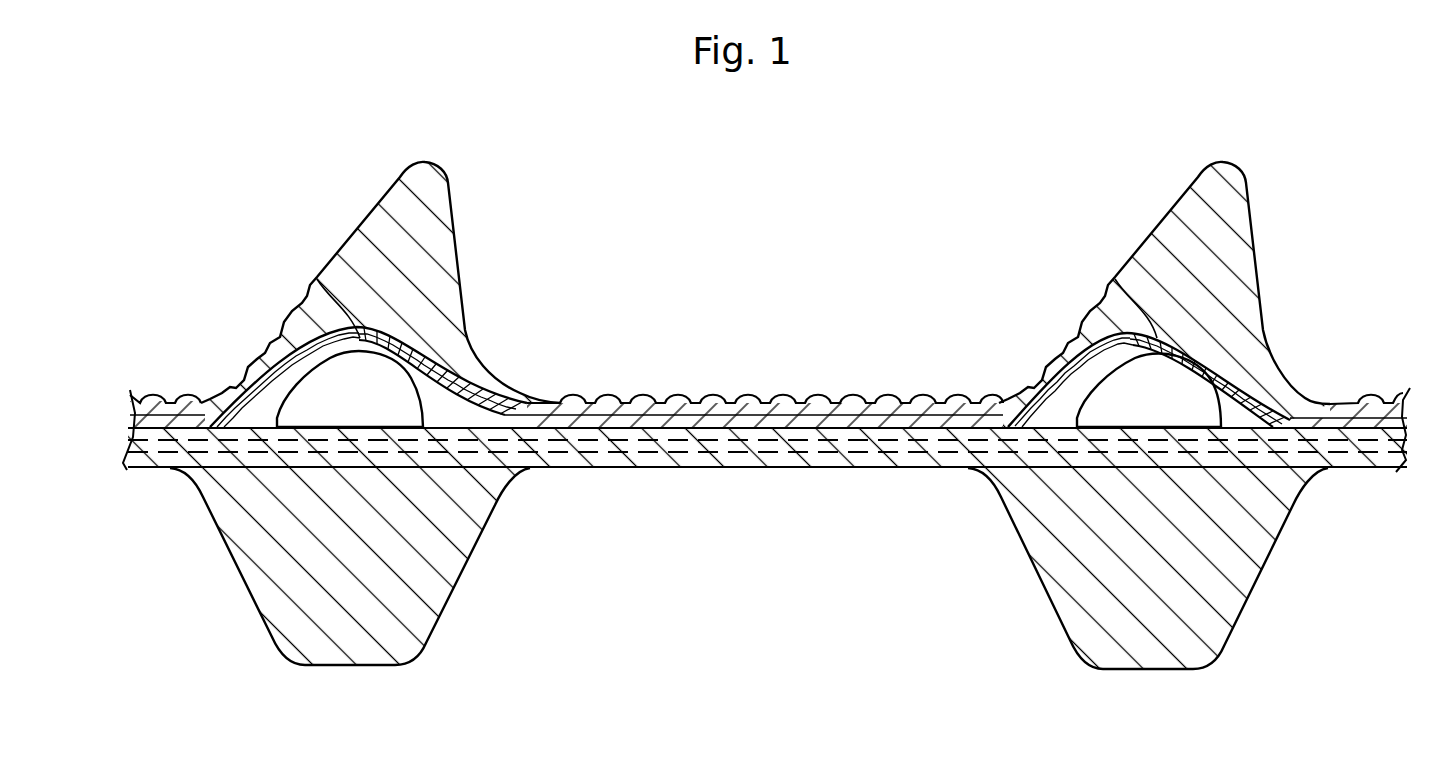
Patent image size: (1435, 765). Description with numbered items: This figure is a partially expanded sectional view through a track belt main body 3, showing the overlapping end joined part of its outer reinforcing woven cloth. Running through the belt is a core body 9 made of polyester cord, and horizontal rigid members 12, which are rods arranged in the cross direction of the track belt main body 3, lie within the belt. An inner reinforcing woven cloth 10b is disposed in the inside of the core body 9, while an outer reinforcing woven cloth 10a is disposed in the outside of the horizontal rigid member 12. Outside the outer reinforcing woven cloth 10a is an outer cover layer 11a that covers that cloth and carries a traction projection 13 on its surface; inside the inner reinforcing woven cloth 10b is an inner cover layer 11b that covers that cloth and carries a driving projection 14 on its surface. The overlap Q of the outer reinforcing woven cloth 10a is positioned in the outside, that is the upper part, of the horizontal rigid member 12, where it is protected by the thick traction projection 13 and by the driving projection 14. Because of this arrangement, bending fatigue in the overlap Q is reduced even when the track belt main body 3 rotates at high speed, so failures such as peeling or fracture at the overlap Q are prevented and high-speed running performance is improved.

The track belt main body 3 is at (791, 388).
The core body 9 is at (806, 454).
The outer reinforcing woven cloth 10a is at (622, 412).
The inner reinforcing woven cloth 10b is at (593, 456).
The outer cover layer 11a is at (713, 398).
The inner cover layer 11b is at (696, 469).
The horizontal rigid member 12 is at (320, 403).
The traction projection 13 is at (440, 256).
The driving projection 14 is at (423, 590).
The overlap Q is at (316, 277).